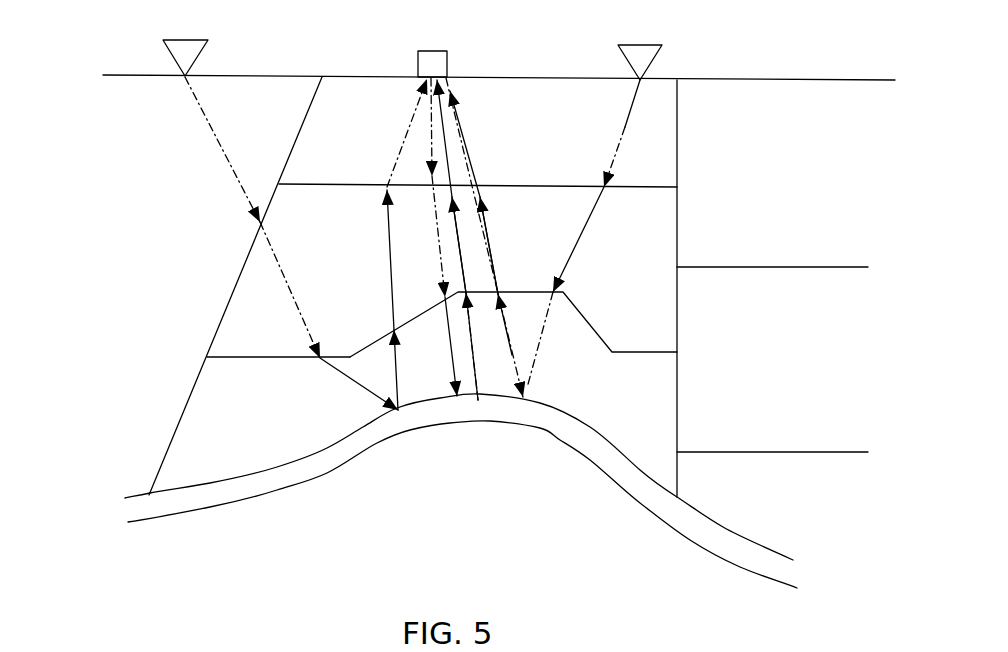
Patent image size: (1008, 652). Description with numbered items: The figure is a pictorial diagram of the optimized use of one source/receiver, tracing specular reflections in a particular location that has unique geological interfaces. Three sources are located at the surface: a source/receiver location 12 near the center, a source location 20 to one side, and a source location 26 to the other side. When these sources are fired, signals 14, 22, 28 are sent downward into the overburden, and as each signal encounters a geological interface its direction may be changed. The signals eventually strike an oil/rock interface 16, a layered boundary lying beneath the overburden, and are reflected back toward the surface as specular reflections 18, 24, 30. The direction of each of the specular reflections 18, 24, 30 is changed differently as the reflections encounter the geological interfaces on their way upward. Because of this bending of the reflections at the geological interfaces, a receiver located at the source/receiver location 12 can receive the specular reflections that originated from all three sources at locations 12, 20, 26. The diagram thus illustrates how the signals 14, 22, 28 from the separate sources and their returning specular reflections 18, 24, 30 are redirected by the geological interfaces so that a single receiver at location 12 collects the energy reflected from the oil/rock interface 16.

The source/receiver location 12 is at (438, 51).
The signal 14 is at (436, 218).
The oil/rock interface 16 is at (332, 448).
The specular reflection 18 is at (472, 372).
The source location 20 is at (650, 62).
The signal 22 is at (623, 132).
The specular reflection 24 is at (477, 167).
The source location 26 is at (197, 60).
The signal 28 is at (238, 165).
The specular reflection 30 is at (390, 167).